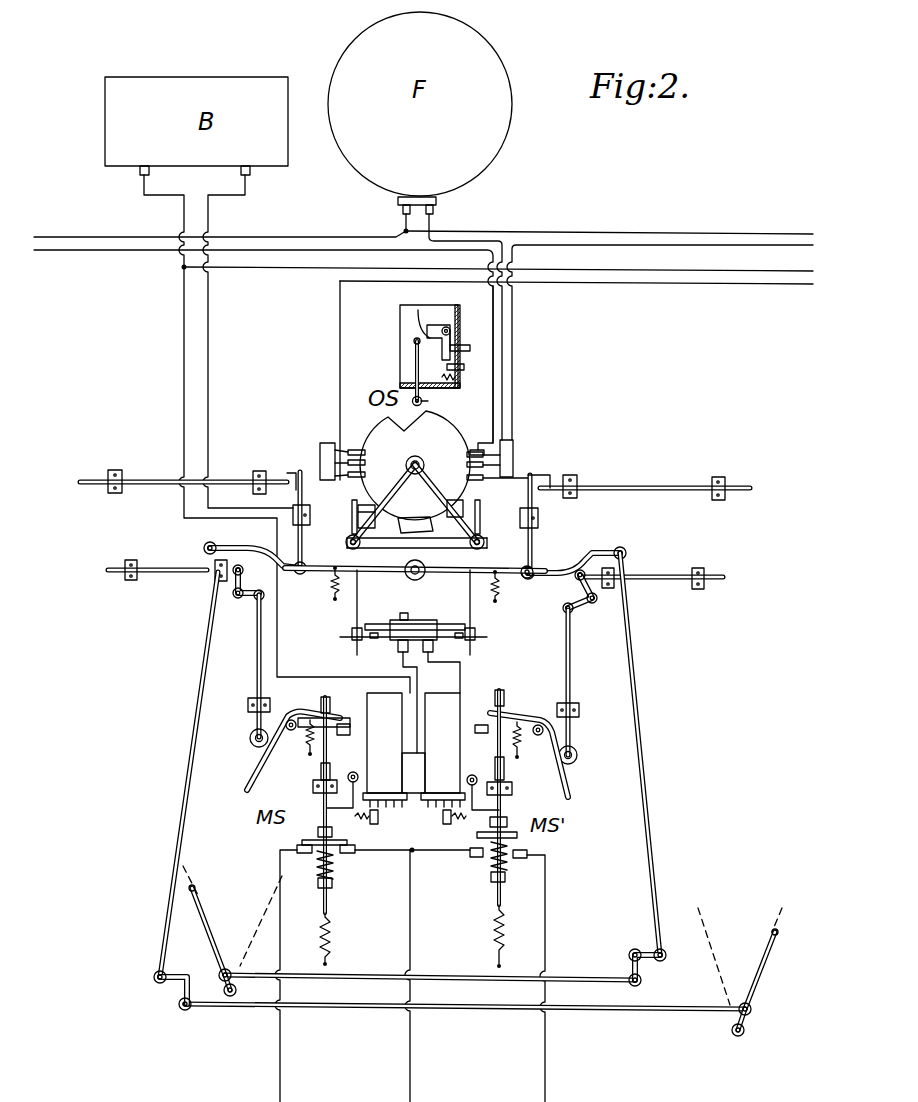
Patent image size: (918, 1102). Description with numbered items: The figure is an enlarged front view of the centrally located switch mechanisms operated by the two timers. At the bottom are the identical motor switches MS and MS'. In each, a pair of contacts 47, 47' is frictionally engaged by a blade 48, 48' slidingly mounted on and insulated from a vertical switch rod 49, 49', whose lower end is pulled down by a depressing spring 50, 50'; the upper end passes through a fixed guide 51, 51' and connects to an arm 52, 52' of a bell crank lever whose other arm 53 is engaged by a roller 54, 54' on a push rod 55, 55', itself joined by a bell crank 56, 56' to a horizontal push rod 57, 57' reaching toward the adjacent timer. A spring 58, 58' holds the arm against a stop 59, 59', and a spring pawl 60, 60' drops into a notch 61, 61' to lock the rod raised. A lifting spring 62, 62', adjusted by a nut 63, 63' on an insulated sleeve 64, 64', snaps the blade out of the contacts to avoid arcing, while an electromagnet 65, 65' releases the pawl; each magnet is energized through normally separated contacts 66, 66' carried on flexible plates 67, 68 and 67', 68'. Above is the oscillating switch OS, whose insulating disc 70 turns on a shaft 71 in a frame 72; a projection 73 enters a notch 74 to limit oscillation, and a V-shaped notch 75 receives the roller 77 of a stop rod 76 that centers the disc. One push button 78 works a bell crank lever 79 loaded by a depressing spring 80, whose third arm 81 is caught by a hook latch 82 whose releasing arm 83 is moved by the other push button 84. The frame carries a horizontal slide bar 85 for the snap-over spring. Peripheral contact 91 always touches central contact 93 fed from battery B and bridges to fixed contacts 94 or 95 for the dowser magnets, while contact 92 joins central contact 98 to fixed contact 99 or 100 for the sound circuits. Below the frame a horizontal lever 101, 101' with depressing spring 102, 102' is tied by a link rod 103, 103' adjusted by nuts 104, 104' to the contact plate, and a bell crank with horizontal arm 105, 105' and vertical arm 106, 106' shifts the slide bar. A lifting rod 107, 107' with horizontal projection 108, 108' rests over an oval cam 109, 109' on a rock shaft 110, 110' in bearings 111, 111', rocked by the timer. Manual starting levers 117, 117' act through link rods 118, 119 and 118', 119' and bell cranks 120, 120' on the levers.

The contacts 47 is at (307, 860).
The contacts 47' is at (508, 864).
The blade 48 is at (337, 834).
The blade 48' is at (472, 842).
The vertical switch rod 49 is at (307, 773).
The switch rod 49' is at (518, 769).
The depressing spring 50 is at (342, 939).
The depressing spring 50' is at (514, 936).
The fixed guide 51 is at (336, 773).
The fixed guide 51' is at (522, 791).
The bell crank lever arm 52 is at (335, 800).
The bell crank lever arm 52' is at (487, 793).
The bell crank arm 53 is at (258, 780).
The roller 54 is at (243, 739).
The roller 54' is at (586, 752).
The push rod 55 is at (245, 666).
The push rod 55' is at (582, 682).
The bell crank 56 is at (245, 594).
The bell crank 56' is at (592, 596).
The horizontal push rod 57 is at (167, 560).
The horizontal push rod 57' is at (651, 569).
The spring 58 is at (297, 743).
The spring 58' is at (529, 746).
The stop 59 is at (328, 734).
The stop 59' is at (462, 722).
The spring pawl 60 is at (372, 777).
The spring pawl 60' is at (454, 781).
The notch 61 is at (322, 800).
The notch 61' is at (510, 804).
The lifting spring 62 is at (342, 873).
The lifting spring 62' is at (476, 871).
The nut 63 is at (310, 897).
The nut 63' is at (514, 884).
The insulated sleeve 64 is at (299, 833).
The insulated sleeve 64' is at (526, 833).
The electromagnet 65 is at (394, 750).
The electromagnet 65' is at (443, 750).
The contacts 66 is at (361, 641).
The contacts 66' is at (487, 644).
The flexible plate 67 is at (392, 641).
The flexible plate 67' is at (503, 641).
The flexible plate 68 is at (415, 625).
The flexible plate 68' is at (454, 611).
The oscillating switch disc member 70 is at (442, 427).
The shaft 71 is at (420, 459).
The frame 72 is at (436, 497).
The projection 73 is at (428, 531).
The notch 74 is at (468, 504).
The V-shaped notch 75 is at (415, 404).
The stop rod 76 is at (412, 357).
The roller 77 is at (428, 401).
The push button 78 is at (462, 367).
The bell crank lever 79 is at (440, 333).
The depressing spring 80 is at (455, 380).
The third arm 81 is at (418, 316).
The hook latch 82 is at (438, 322).
The releasing arm 83 is at (453, 333).
The push button 84 is at (466, 348).
The horizontal slide bar 85 is at (360, 508).
The contact 91 is at (366, 466).
The contact 92 is at (467, 466).
The central contact 93 is at (345, 450).
The fixed contact 94 is at (345, 463).
The fixed contact 95 is at (350, 448).
The central fixed contact 98 is at (490, 456).
The fixed contact 99 is at (490, 470).
The fixed contact 100 is at (478, 450).
The horizontally disposed lever 101 is at (415, 573).
The lever 101' is at (480, 576).
The depressing spring 102 is at (315, 583).
The depressing spring 102' is at (522, 586).
The link rod 103 is at (417, 552).
The link rod 103' is at (417, 553).
The nuts 104 is at (337, 620).
The nuts 104' is at (494, 620).
The horizontal arm 105 is at (340, 534).
The horizontal arm 105' is at (501, 534).
The vertical arm 106 is at (338, 517).
The vertical arm 106' is at (503, 517).
The vertical lifting rod 107 is at (257, 539).
The lifting rod 107' is at (573, 535).
The horizontal projection 108 is at (274, 469).
The horizontal projection 108' is at (557, 451).
The oval shaped cam 109 is at (281, 520).
The cam 109' is at (568, 507).
The rock shaft 110 is at (183, 468).
The rock shaft 110' is at (645, 471).
The bearings 111 is at (183, 477).
The bearings 111' is at (666, 477).
The manual starting switch lever 117 is at (232, 931).
The manual starting switch lever 117' is at (756, 972).
The link rod 118 is at (430, 963).
The link rod 118' is at (465, 1022).
The link rod 119 is at (662, 754).
The link rod 119' is at (179, 774).
The bell crank 120 is at (658, 969).
The bell crank 120' is at (167, 993).